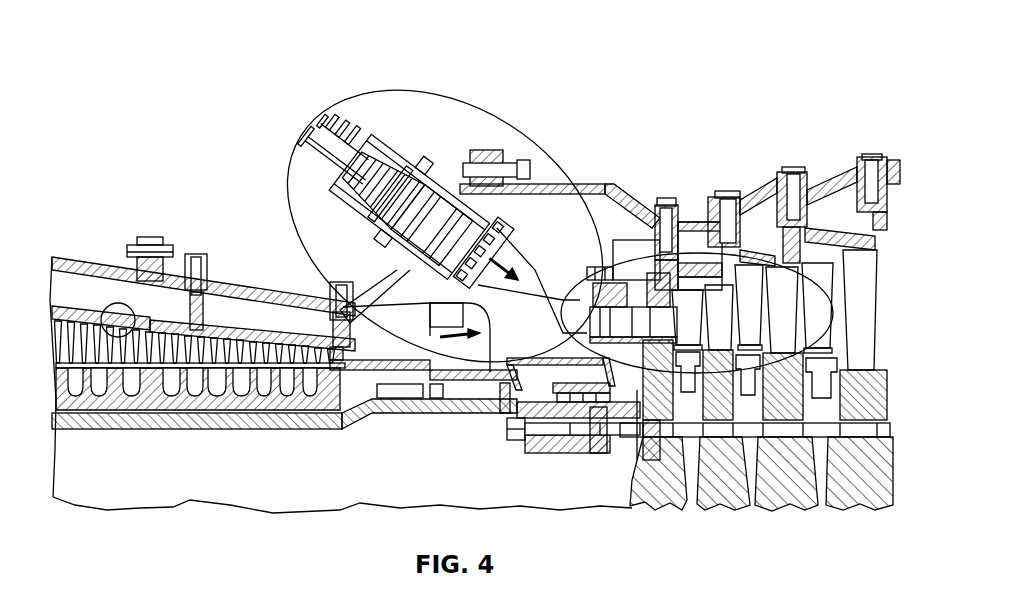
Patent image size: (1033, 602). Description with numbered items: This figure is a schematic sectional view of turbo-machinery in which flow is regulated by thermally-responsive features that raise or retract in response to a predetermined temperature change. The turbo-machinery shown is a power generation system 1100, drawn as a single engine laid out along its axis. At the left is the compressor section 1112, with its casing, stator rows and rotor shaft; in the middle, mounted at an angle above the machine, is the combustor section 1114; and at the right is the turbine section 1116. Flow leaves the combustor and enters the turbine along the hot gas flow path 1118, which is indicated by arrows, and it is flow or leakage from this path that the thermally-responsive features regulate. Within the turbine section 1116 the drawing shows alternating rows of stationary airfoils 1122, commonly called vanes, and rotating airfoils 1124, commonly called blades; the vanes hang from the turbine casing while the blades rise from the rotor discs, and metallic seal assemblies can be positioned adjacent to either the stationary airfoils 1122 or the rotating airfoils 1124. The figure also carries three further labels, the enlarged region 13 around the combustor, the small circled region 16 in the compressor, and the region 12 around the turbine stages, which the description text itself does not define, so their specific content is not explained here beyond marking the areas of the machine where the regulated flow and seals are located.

The power generation system 1100 is at (218, 140).
The compressor section 1112 is at (106, 224).
The combustor section 13 is at (451, 89).
The combustor section 1114 is at (500, 141).
The turbine section 1116 is at (813, 140).
The hot gas flow path 1118 is at (511, 254).
The compressor stage region 16 is at (136, 306).
The turbine hot gas path 12 is at (730, 260).
The stationary airfoils 1122 is at (752, 308).
The rotating airfoils 1124 is at (791, 310).